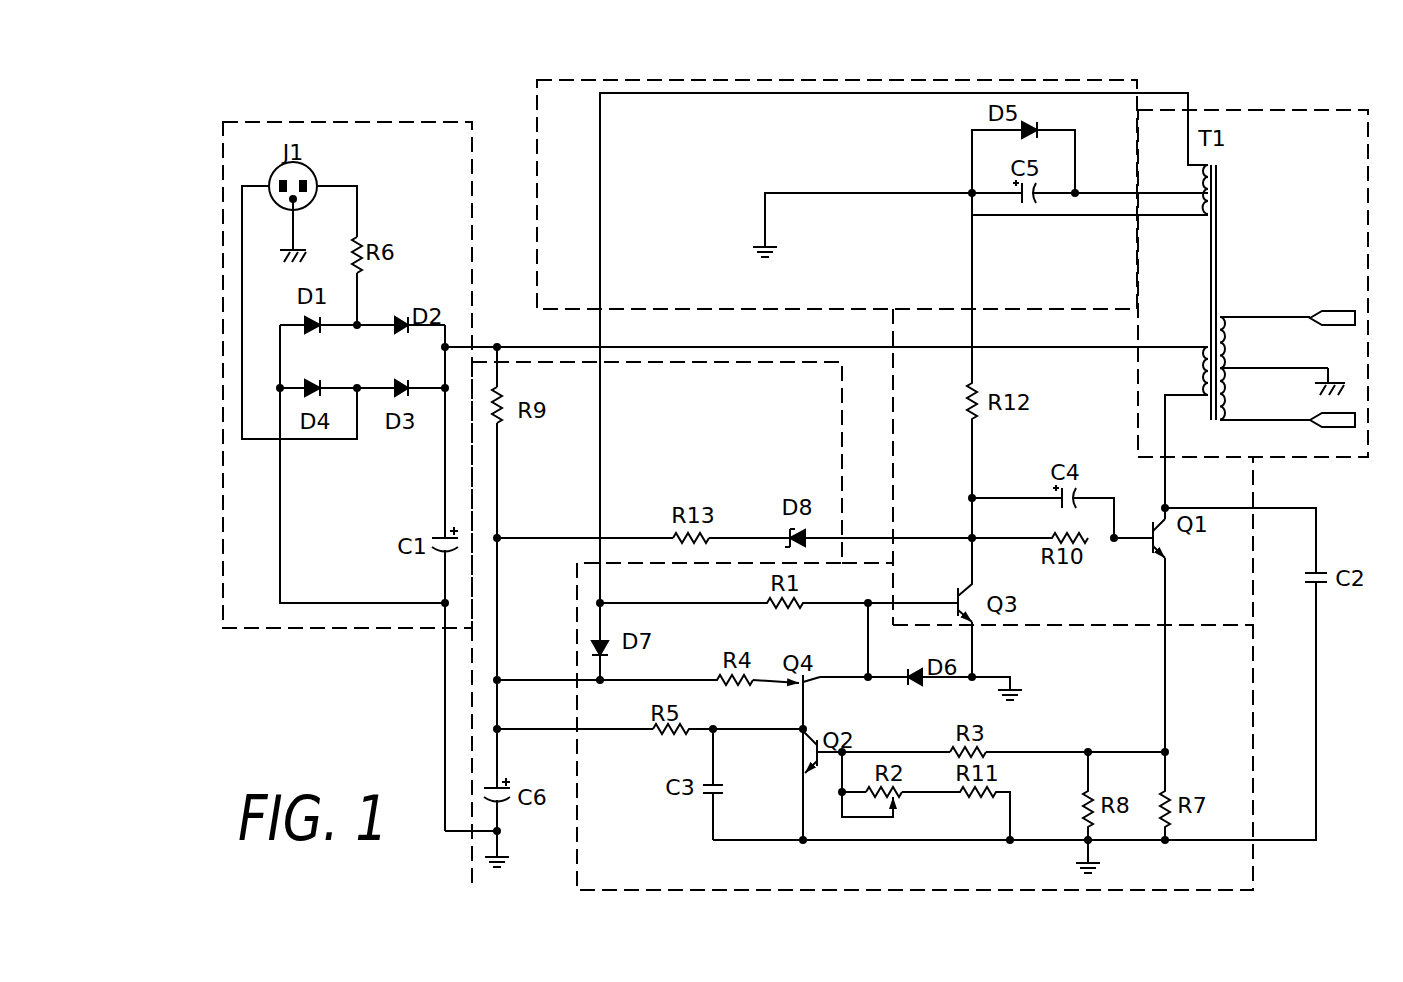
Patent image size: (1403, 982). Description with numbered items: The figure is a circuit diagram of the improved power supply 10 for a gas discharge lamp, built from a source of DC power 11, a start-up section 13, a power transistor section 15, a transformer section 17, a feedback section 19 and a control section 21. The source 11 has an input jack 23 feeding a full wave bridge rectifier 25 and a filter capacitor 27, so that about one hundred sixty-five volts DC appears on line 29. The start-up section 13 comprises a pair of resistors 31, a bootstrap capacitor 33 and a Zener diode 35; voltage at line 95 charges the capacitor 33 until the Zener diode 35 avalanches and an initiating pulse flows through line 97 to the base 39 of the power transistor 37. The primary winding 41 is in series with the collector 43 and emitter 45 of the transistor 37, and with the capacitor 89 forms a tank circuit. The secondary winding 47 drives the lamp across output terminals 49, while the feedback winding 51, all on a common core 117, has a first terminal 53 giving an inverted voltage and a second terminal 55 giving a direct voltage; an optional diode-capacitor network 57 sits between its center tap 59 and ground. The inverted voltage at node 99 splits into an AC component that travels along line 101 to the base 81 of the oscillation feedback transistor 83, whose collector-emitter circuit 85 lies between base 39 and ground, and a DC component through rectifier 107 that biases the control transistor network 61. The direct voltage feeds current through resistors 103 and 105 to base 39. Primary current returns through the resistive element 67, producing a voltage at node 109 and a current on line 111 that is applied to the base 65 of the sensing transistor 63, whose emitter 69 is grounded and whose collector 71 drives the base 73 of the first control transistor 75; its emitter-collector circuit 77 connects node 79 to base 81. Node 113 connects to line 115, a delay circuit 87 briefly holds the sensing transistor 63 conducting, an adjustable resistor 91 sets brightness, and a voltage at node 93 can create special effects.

The power supply 10 is at (488, 154).
The source of DC power 11 is at (413, 124).
The start-up section 13 is at (686, 363).
The power transistor section 15 is at (892, 420).
The transformer section 17 is at (1245, 110).
The feedback section 19 is at (537, 188).
The control section 21 is at (1256, 770).
The input jack 23 is at (318, 174).
The full wave bridge rectifier 25 is at (378, 324).
The filter capacitor 27 is at (445, 536).
The line 29 is at (520, 347).
The resistors 31 is at (500, 420).
The bootstrap capacitor 33 is at (504, 806).
The Zener diode 35 is at (789, 530).
The power transistor 37 is at (1145, 551).
The base of the power transistor 39 is at (1125, 540).
The primary winding 41 is at (1204, 356).
The collector 43 is at (1162, 480).
The emitter 45 is at (1164, 598).
The secondary winding 47 is at (1226, 318).
The output terminals 49 is at (1312, 414).
The feedback winding 51 is at (1218, 185).
The first terminal 53 is at (1190, 93).
The second terminal 55 is at (1200, 220).
The diode-capacitor network 57 is at (972, 158).
The center tap 59 is at (1164, 190).
The control transistor network 61 is at (677, 808).
The sensing transistor 63 is at (790, 764).
The base of the sensing transistor 65 is at (906, 750).
The resistive element 67 is at (1148, 778).
The emitter of the sensing transistor 69 is at (802, 787).
The collector of the sensing transistor 71 is at (806, 740).
The base of the first control transistor 73 is at (803, 714).
The first control transistor 75 is at (778, 688).
The emitter-collector circuit 77 is at (801, 667).
The node 79 is at (605, 680).
The base of the oscillation feedback transistor 81 is at (880, 600).
The oscillation feedback transistor 83 is at (947, 613).
The collector-emitter circuit 85 is at (980, 578).
The delay circuit 87 is at (655, 780).
The capacitor 89 is at (1316, 586).
The adjustable resistor 91 is at (905, 794).
The node 93 is at (860, 752).
The line 95 is at (500, 495).
The line 97 is at (856, 537).
The node 99 is at (603, 602).
The line 101 is at (676, 602).
The resistor 103 is at (978, 410).
The resistor 105 is at (1058, 535).
The rectifier 107 is at (590, 645).
The node 109 is at (1088, 750).
The line 111 is at (1000, 750).
The node 113 is at (800, 731).
The line 115 is at (585, 730).
The common core 117 is at (1218, 258).